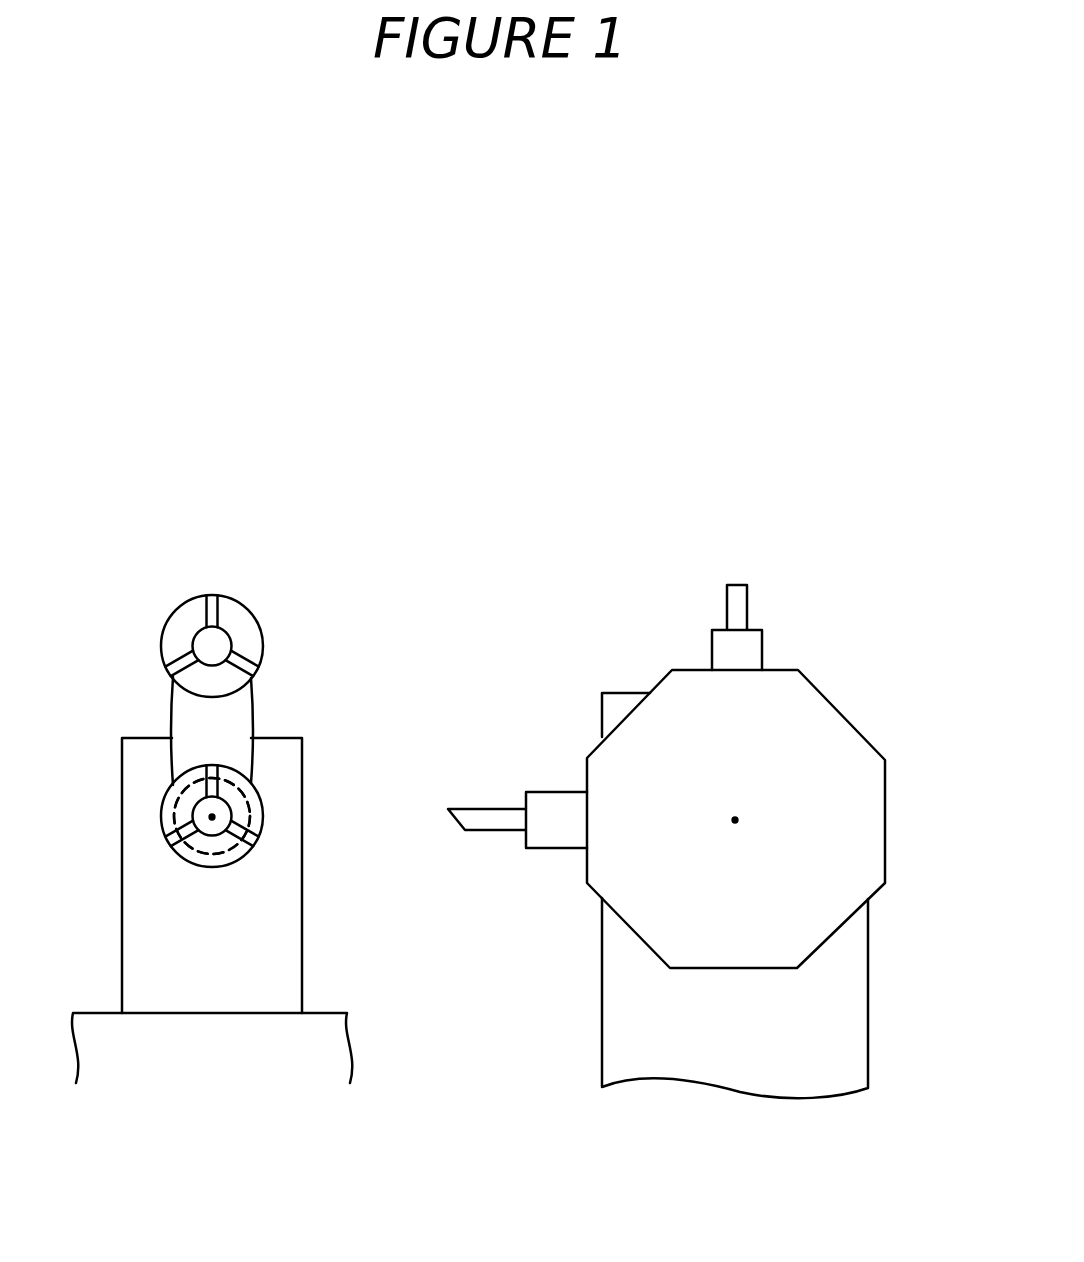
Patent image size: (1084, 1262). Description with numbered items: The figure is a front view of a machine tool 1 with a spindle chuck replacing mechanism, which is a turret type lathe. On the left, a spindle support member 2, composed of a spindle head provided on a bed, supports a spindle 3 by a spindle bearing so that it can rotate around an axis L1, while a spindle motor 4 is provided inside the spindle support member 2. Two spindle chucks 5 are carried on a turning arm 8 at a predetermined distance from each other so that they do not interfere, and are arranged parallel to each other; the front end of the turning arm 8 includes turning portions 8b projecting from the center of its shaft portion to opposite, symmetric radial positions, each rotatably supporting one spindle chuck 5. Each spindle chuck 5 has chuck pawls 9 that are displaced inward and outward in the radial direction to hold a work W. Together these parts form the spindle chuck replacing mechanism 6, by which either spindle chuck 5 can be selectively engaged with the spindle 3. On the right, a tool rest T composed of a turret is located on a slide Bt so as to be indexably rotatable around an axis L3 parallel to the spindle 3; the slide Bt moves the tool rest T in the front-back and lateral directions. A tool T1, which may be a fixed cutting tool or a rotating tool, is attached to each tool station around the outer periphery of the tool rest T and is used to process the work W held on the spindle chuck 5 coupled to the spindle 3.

The machine tool 1 is at (138, 526).
The spindle support member 2 is at (122, 917).
The spindle 3 is at (275, 858).
The spindle motor 4 is at (237, 857).
The spindle chuck 5 is at (245, 625).
The spindle chuck replacing mechanism 6 is at (240, 731).
The turning arm 8 is at (183, 717).
The turning portion 8b is at (207, 595).
The chuck pawl 9 is at (218, 597).
The work W is at (207, 643).
The axis L1 is at (212, 818).
The tool rest T is at (887, 817).
The tool T1 is at (493, 808).
The axis L3 is at (735, 820).
The slide Bt is at (850, 1012).